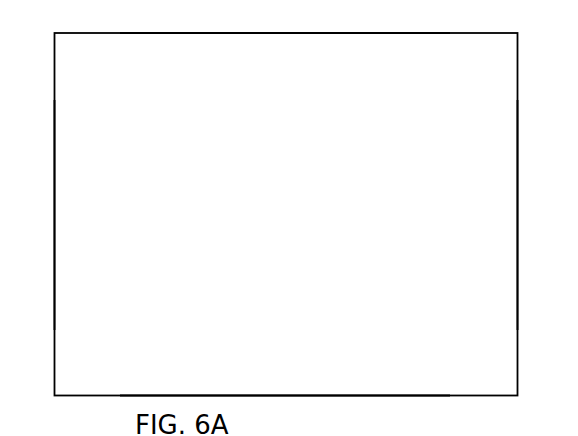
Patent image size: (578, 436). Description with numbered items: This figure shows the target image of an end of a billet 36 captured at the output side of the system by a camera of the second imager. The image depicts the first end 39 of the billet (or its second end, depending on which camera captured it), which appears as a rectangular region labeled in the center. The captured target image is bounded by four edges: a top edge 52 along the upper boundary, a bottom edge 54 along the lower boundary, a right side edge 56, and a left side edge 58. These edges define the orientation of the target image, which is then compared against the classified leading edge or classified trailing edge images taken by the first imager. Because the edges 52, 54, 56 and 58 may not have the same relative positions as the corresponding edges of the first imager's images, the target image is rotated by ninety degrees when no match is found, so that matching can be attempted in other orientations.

The billet 36 is at (519, 108).
The top edge 52 is at (260, 34).
The bottom edge 54 is at (266, 395).
The right side edge 56 is at (517, 162).
The left side edge 58 is at (55, 170).
The first end 39 is at (266, 200).